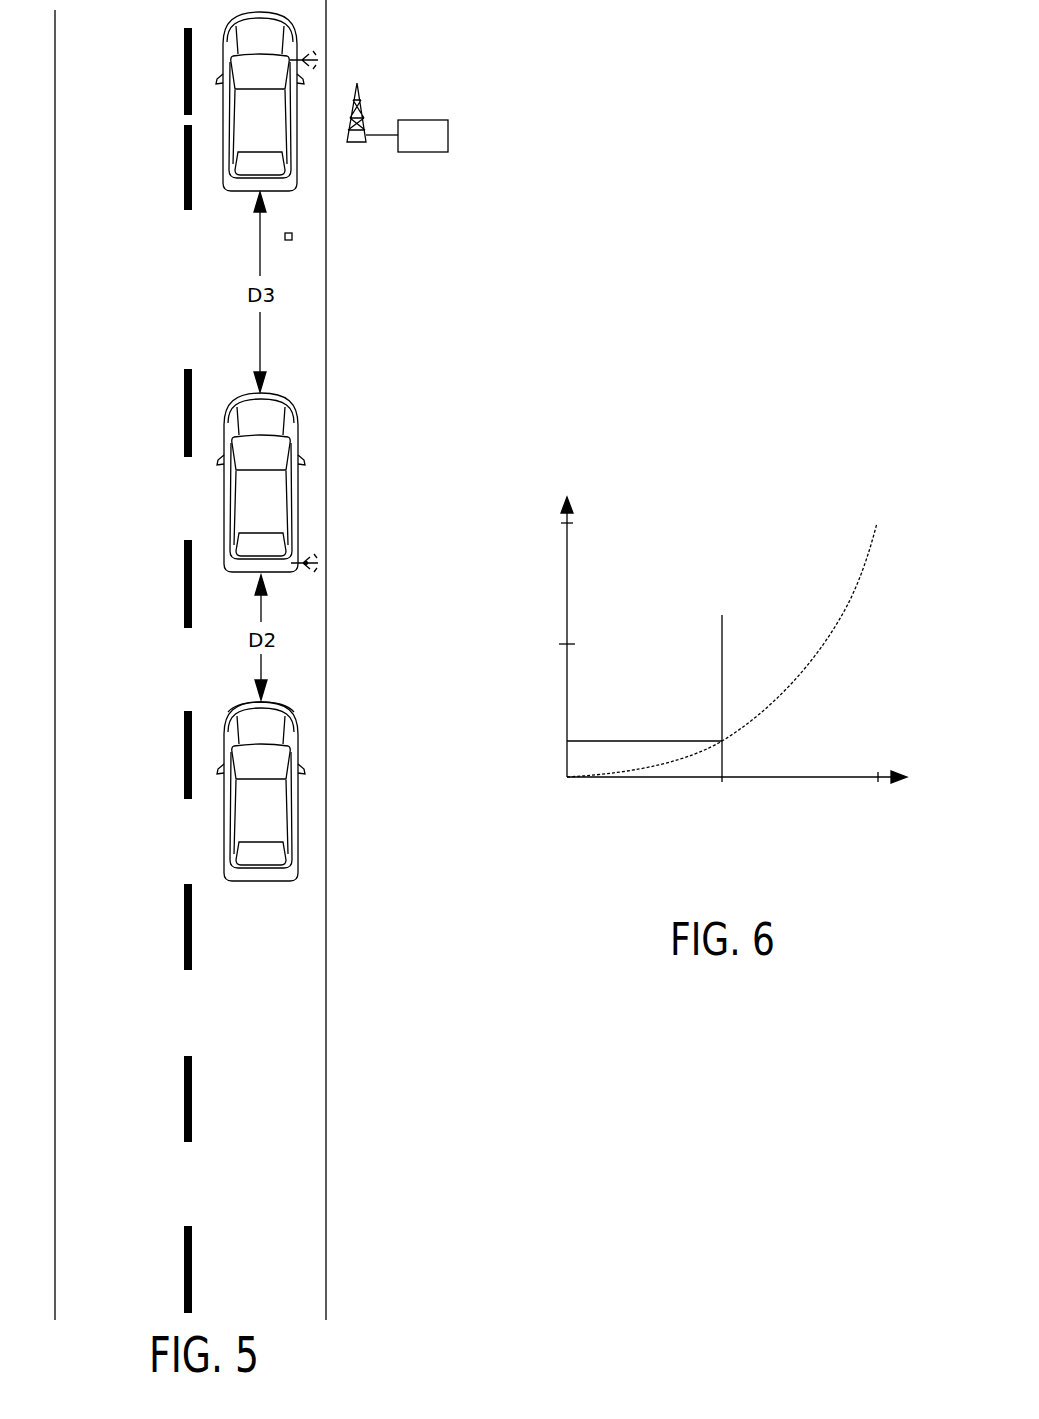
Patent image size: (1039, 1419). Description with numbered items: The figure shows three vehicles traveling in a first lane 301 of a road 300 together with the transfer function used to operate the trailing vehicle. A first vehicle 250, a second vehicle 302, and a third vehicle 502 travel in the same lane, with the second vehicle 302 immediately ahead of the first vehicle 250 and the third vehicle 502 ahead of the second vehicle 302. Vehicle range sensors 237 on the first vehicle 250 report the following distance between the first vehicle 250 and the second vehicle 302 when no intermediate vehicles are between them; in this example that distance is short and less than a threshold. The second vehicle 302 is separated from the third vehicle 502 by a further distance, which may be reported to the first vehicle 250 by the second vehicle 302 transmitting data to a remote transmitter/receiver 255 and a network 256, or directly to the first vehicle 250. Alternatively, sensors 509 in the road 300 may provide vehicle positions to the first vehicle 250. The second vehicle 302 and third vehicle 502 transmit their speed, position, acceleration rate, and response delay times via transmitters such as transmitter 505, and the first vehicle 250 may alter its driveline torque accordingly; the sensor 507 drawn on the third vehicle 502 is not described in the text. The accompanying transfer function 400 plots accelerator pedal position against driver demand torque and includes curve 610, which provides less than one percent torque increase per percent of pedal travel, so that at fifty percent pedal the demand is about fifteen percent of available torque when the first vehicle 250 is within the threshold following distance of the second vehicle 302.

In FIG. 5, the road 300 is at (390, 38).
In FIG. 5, the first lane 301 is at (312, 915).
In FIG. 5, the second vehicle 302 is at (299, 482).
In FIG. 5, the vehicle range sensors 237 is at (276, 703).
In FIG. 5, the first vehicle 250 is at (299, 840).
In FIG. 5, the remote transmitter/receiver 255 is at (357, 83).
In FIG. 5, the network 256 is at (407, 136).
In FIG. 5, the third vehicle 502 is at (292, 176).
In FIG. 5, the transmitter 505 is at (298, 568).
In FIG. 5, the front sensor 507 is at (300, 58).
In FIG. 5, the sensors 509 is at (291, 243).
In FIG. 6, the transfer function 400 is at (567, 470).
In FIG. 6, the curve 610 is at (799, 683).